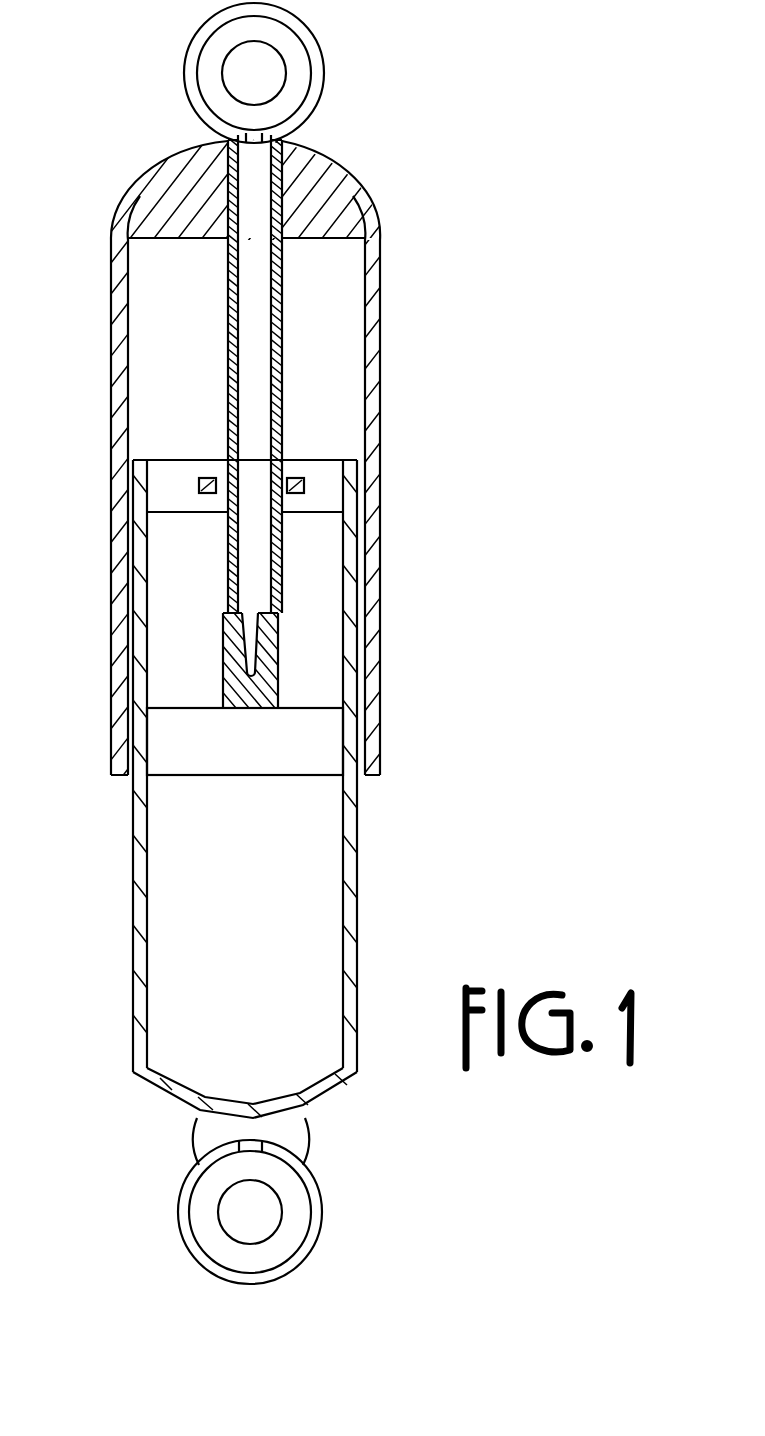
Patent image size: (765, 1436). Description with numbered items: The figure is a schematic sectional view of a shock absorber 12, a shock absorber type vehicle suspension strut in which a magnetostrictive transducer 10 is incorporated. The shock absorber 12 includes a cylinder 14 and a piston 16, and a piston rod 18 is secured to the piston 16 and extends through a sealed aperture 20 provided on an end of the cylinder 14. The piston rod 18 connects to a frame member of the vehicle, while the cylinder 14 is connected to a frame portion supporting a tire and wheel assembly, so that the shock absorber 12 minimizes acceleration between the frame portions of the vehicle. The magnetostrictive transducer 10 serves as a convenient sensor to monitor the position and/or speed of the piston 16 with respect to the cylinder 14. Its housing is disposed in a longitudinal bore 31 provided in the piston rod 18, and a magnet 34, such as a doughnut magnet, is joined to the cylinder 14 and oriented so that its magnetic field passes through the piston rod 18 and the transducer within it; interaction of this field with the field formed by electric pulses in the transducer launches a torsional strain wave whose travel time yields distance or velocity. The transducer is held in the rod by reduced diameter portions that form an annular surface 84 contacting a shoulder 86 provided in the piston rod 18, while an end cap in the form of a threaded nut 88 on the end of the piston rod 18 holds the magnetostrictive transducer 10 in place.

The magnetostrictive transducer 10 is at (250, 378).
The shock absorber 12 is at (430, 241).
The cylinder 14 is at (357, 842).
The piston 16 is at (320, 733).
The piston rod 18 is at (278, 663).
The sealed aperture 20 is at (283, 460).
The longitudinal bore 31 is at (265, 342).
The magnet 34 is at (205, 478).
The annular surface 84 is at (240, 614).
The shoulder 86 is at (262, 612).
The threaded nut 88 is at (258, 182).